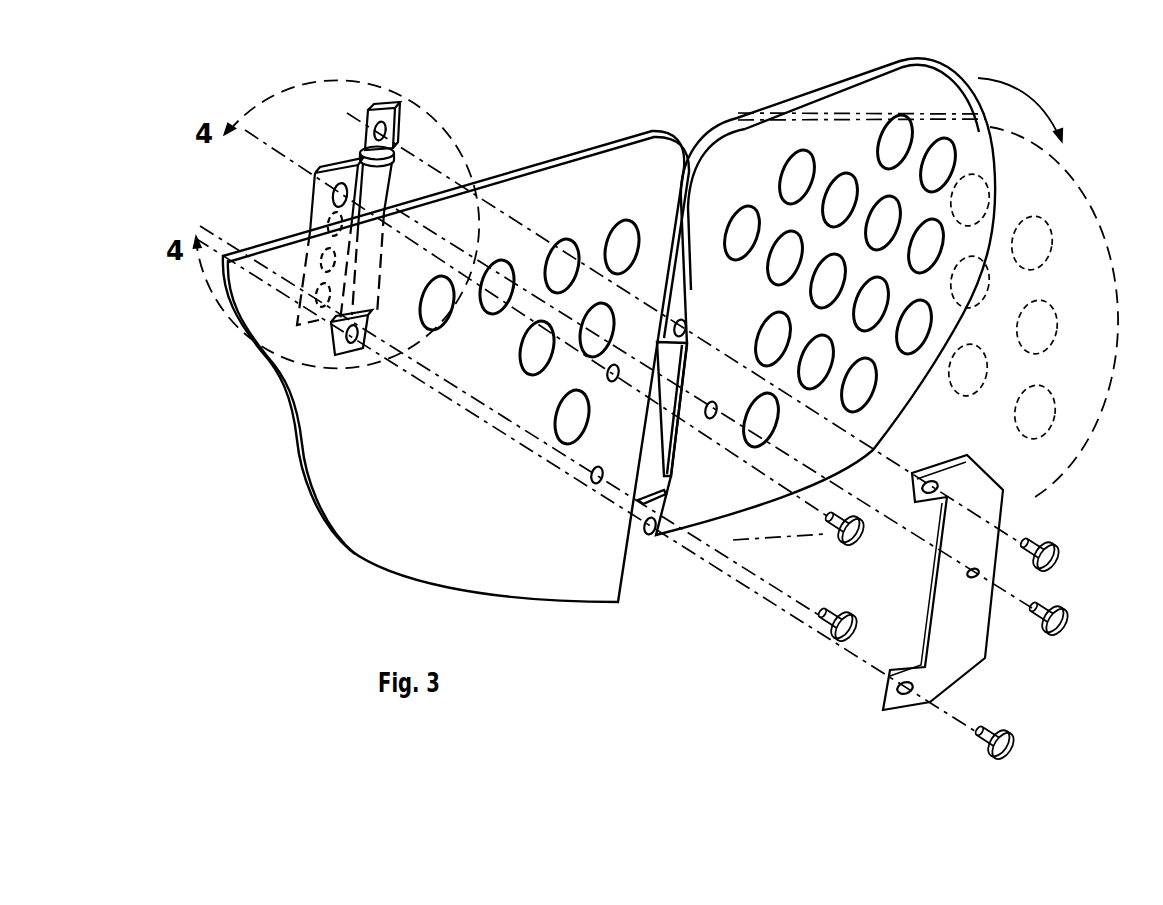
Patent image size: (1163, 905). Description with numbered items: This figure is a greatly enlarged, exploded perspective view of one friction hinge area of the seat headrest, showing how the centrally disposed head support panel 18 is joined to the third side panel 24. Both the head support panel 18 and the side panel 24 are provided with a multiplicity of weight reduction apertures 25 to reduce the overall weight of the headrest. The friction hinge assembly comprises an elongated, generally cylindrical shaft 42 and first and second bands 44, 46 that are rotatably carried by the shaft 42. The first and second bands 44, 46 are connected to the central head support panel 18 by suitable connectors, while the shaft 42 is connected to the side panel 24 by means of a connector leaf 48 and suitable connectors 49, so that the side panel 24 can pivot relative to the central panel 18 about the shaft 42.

The head support panel 18 is at (373, 520).
The third side panel 24 is at (873, 90).
The weight reduction apertures 25 is at (562, 240).
The shaft 42 is at (396, 114).
The first band 44 is at (366, 204).
The second band 46 is at (352, 283).
The connector leaf 48 is at (967, 640).
The connectors 49 is at (1063, 550).